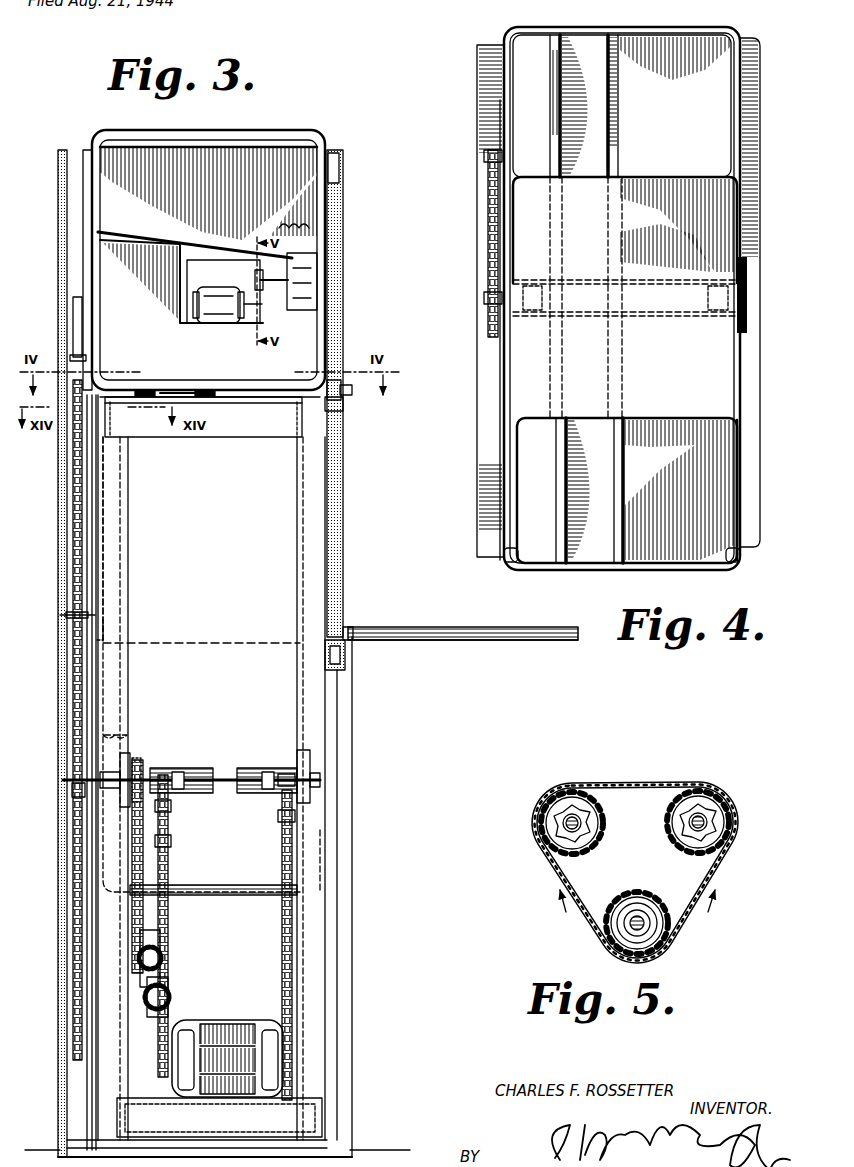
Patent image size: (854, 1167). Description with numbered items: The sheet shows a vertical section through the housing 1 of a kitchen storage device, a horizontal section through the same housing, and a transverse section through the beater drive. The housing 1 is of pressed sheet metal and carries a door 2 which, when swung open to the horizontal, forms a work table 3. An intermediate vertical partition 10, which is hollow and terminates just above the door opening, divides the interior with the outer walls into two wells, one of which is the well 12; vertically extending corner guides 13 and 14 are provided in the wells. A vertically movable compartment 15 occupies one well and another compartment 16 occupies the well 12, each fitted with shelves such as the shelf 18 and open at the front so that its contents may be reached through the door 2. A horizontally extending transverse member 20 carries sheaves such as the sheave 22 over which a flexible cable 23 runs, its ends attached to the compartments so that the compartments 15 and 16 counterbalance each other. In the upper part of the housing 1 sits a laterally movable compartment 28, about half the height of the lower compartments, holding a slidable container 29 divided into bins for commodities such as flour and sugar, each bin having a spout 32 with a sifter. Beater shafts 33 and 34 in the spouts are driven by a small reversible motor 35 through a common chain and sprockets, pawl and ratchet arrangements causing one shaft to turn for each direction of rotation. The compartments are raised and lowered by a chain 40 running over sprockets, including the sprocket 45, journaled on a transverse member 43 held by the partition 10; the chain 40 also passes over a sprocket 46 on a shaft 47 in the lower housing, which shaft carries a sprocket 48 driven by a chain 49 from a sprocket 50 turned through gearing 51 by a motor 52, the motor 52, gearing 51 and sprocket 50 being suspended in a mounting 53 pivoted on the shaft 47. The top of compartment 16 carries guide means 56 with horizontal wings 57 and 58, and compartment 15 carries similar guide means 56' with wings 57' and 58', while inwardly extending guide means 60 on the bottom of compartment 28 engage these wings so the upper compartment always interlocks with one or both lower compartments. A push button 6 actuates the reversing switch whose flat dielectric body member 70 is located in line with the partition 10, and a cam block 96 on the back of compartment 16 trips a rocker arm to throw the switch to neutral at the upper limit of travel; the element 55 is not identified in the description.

In FIG. 3, the housing 1 is at (354, 770).
In FIG. 4, the housing 1 is at (760, 432).
In FIG. 3, the door 2 is at (515, 645).
In FIG. 3, the work table 3 is at (404, 627).
In FIG. 3, the push button 6 is at (346, 378).
In FIG. 3, the vertical partition 10 is at (110, 534).
In FIG. 4, the vertical partition 10 is at (544, 299).
In FIG. 3, the well 12 is at (214, 545).
In FIG. 4, the corner guide 13 is at (510, 562).
In FIG. 4, the corner guide 14 is at (735, 562).
In FIG. 4, the compartment 15 is at (740, 508).
In FIG. 3, the compartment 16 is at (290, 725).
In FIG. 4, the compartment 16 is at (708, 106).
In FIG. 3, the shelf 18 is at (226, 642).
In FIG. 3, the transverse member 20 is at (82, 284).
In FIG. 3, the sheave 22 is at (74, 310).
In FIG. 3, the flexible cable 23 is at (76, 363).
In FIG. 3, the laterally movable compartment 28 is at (290, 131).
In FIG. 4, the laterally movable compartment 28 is at (685, 175).
In FIG. 3, the container 29 is at (296, 221).
In FIG. 3, the spout 32 is at (300, 258).
In FIG. 5, the shaft 33 is at (563, 826).
In FIG. 5, the shaft 34 is at (708, 821).
In FIG. 3, the reversible motor 35 is at (221, 296).
In FIG. 3, the chain 40 is at (73, 545).
In FIG. 3, the transverse member 43 is at (95, 570).
In FIG. 4, the transverse member 43 is at (505, 220).
In FIG. 3, the sprocket 45 is at (72, 614).
In FIG. 3, the sprocket 46 is at (72, 792).
In FIG. 3, the shaft 47 is at (215, 777).
In FIG. 3, the sprocket 48 is at (138, 774).
In FIG. 3, the chain 49 is at (148, 877).
In FIG. 3, the sprocket 50 is at (156, 954).
In FIG. 3, the gearing 51 is at (166, 990).
In FIG. 3, the motor 52 is at (216, 1022).
In FIG. 3, the mounting 53 is at (170, 922).
In FIG. 3, the shelf bracket 55 is at (93, 372).
In FIG. 3, the guide means 56 is at (203, 417).
In FIG. 4, the guide means 56 is at (605, 106).
In FIG. 3, the wing 57 is at (210, 373).
In FIG. 4, the wing 57 is at (541, 106).
In FIG. 3, the wing 58 is at (200, 373).
In FIG. 4, the wing 58 is at (669, 106).
In FIG. 3, the guide means 60 is at (212, 392).
In FIG. 3, the body member 70 is at (343, 406).
In FIG. 3, the cam block 96 is at (104, 632).
In FIG. 4, the guide means 56' is at (591, 579).
In FIG. 4, the wing 57' is at (550, 510).
In FIG. 4, the wing 58' is at (628, 510).